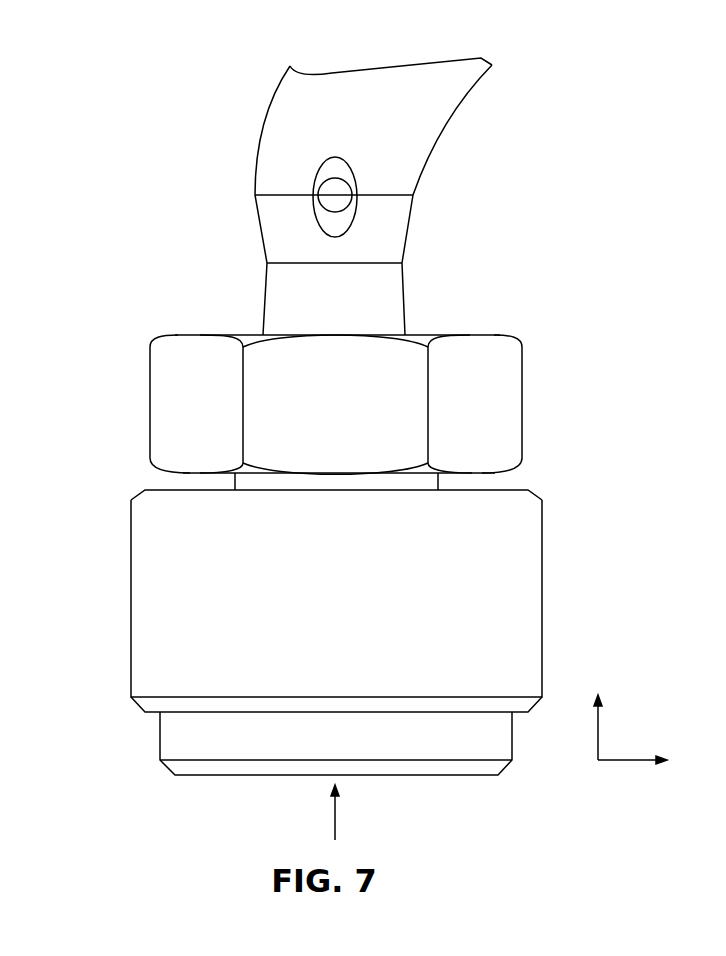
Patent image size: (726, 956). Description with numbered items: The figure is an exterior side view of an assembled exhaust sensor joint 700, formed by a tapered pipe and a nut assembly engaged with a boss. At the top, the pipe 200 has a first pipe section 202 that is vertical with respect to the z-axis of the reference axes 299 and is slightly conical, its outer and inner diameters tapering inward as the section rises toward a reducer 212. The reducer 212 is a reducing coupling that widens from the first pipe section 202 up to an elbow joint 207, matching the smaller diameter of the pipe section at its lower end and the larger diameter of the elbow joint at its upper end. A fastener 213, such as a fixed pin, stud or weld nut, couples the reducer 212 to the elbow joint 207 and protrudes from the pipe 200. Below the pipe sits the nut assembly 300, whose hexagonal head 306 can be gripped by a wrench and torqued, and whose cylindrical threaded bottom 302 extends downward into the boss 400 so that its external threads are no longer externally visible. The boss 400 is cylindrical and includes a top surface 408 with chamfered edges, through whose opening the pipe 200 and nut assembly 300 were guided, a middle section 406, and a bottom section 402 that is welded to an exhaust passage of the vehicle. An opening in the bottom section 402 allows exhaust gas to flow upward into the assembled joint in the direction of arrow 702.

The pipe 200 is at (258, 90).
The first pipe section 202 is at (406, 298).
The elbow joint 207 is at (478, 78).
The reducer 212 is at (262, 232).
The fastener 213 is at (342, 201).
The reference axes 299 is at (647, 690).
The nut assembly 300 is at (170, 308).
The threaded bottom 302 is at (233, 483).
The head 306 is at (522, 392).
The boss 400 is at (582, 440).
The bottom section 402 is at (160, 743).
The middle section 406 is at (542, 590).
The top surface 408 is at (520, 487).
The exhaust sensor joint 700 is at (617, 115).
The arrow 702 is at (335, 826).